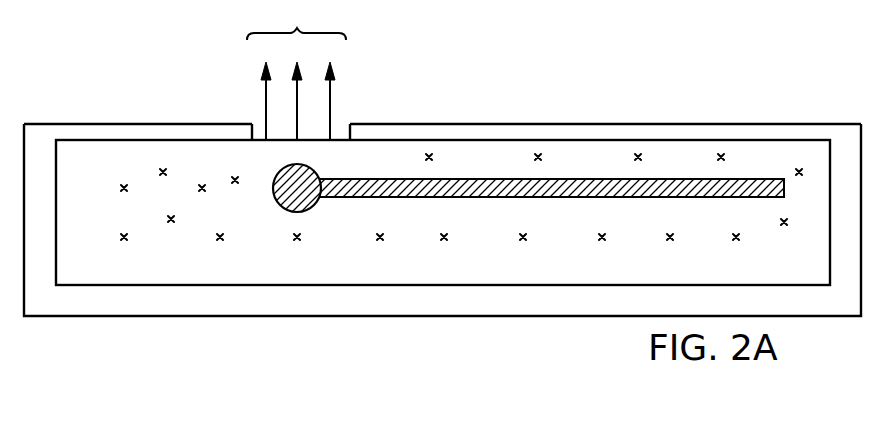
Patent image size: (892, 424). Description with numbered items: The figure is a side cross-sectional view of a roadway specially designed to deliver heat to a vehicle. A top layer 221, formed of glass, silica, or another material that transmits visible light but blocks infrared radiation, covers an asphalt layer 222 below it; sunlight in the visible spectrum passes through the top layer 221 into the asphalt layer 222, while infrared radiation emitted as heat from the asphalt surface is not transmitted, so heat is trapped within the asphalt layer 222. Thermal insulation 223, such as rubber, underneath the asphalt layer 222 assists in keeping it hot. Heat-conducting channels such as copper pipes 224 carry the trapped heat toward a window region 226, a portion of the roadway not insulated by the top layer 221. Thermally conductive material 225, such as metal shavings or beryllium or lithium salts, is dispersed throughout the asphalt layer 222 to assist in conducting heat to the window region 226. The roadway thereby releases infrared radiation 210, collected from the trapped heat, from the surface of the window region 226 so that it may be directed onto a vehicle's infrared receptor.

The infrared radiation 210 is at (333, 104).
The top layer 221 is at (541, 131).
The asphalt layer 222 is at (666, 154).
The thermal insulation 223 is at (852, 131).
The copper pipe 224 is at (455, 178).
The thermally conductive material 225 is at (152, 168).
The window region 226 is at (313, 71).